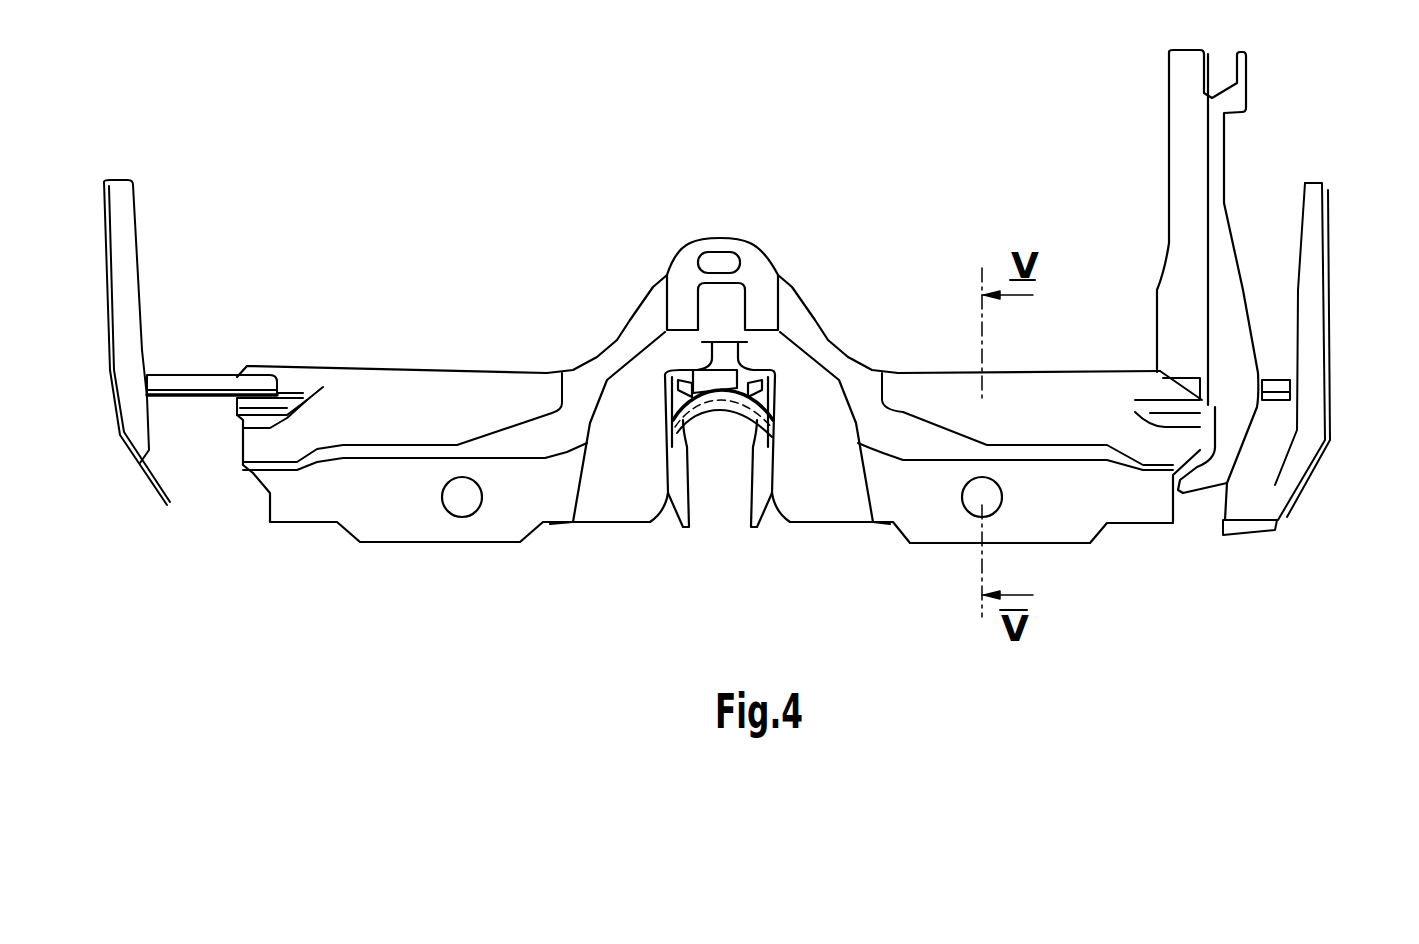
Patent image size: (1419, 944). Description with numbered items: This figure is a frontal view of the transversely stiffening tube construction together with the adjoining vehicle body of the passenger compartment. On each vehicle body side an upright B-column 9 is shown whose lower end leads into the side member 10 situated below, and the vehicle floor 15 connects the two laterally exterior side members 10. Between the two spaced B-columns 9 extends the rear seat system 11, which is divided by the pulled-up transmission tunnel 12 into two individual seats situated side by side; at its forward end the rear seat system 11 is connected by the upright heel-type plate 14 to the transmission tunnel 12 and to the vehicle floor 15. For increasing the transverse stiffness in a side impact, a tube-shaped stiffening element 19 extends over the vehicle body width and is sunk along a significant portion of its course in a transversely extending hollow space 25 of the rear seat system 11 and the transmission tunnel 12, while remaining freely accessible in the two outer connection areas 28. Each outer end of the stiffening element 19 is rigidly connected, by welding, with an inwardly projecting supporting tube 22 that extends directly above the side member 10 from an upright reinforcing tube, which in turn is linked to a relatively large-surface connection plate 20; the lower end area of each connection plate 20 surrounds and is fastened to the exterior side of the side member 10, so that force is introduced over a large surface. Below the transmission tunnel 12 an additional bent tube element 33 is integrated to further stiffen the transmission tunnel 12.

The B-column 9 is at (1167, 103).
The side member 10 is at (1263, 482).
The rear seat system 11 is at (547, 369).
The transmission tunnel 12 is at (797, 288).
The heel-type plate 14 is at (390, 522).
The vehicle floor 15 is at (473, 545).
The tube-shaped stiffening element 19 is at (308, 393).
The connection plate 20 is at (120, 232).
The supporting tube 22 is at (192, 387).
The hollow space 25 is at (1008, 392).
The outer connection area 28 is at (1153, 391).
The bent tube element 33 is at (720, 405).